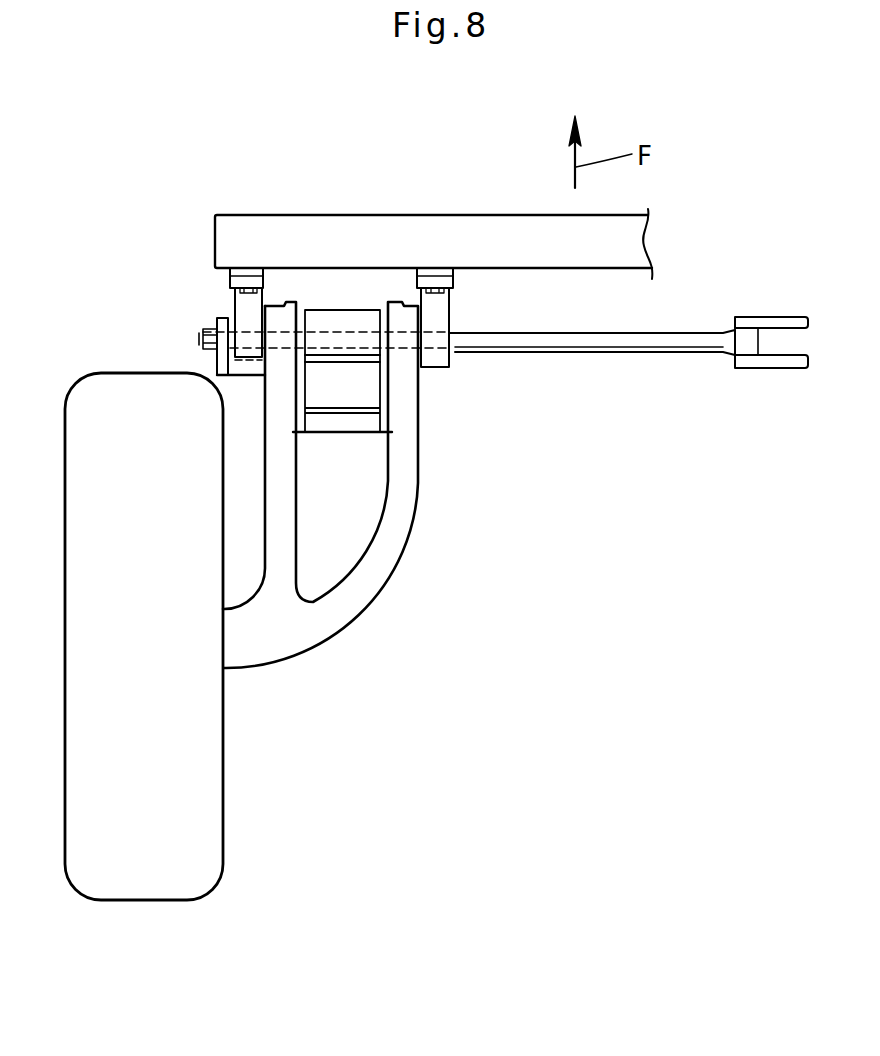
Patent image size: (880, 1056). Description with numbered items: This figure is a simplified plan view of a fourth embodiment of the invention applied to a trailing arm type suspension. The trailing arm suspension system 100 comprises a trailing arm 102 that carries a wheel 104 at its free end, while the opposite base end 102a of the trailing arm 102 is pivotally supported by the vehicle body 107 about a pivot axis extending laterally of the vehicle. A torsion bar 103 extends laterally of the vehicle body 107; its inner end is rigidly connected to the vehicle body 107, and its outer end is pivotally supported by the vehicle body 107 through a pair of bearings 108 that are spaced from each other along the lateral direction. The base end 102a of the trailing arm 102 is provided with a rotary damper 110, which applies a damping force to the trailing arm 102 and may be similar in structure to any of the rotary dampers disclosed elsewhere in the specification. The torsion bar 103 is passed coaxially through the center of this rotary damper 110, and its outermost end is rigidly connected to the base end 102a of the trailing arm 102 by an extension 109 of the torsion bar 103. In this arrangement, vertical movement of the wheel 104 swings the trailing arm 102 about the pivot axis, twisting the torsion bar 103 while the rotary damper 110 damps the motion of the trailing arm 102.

The trailing arm suspension system 100 is at (461, 680).
The trailing arm 102 is at (329, 496).
The base end 102a is at (262, 405).
The torsion bar 103 is at (621, 355).
The wheel 104 is at (223, 783).
The vehicle body 107 is at (311, 222).
The bearings 108 is at (235, 303).
The extension 109 is at (217, 360).
The rotary damper 110 is at (342, 440).